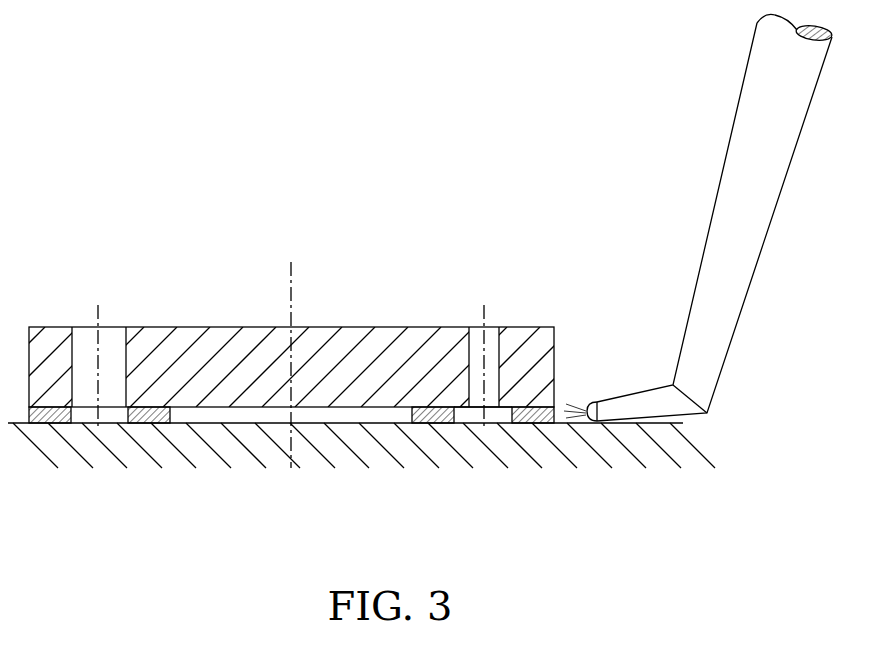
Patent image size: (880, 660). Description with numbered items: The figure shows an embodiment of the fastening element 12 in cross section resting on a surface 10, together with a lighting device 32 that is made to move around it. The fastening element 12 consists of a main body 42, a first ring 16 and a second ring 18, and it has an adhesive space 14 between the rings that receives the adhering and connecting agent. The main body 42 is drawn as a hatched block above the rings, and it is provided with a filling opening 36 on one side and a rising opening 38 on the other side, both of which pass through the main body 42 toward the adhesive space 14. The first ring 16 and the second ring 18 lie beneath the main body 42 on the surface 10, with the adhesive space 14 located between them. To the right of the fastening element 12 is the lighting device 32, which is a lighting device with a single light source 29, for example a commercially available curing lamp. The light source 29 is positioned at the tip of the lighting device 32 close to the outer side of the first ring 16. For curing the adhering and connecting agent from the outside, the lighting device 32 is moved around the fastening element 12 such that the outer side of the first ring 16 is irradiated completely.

The substrate 10 is at (563, 423).
The fastening element 12 is at (555, 337).
The adhesive space 14 is at (477, 413).
The first ring 16 is at (42, 415).
The second ring 18 is at (150, 415).
The light source 29 is at (589, 414).
The lighting device 32 is at (712, 342).
The filling opening 36 is at (99, 338).
The rising opening 38 is at (484, 334).
The main body 42 is at (245, 350).